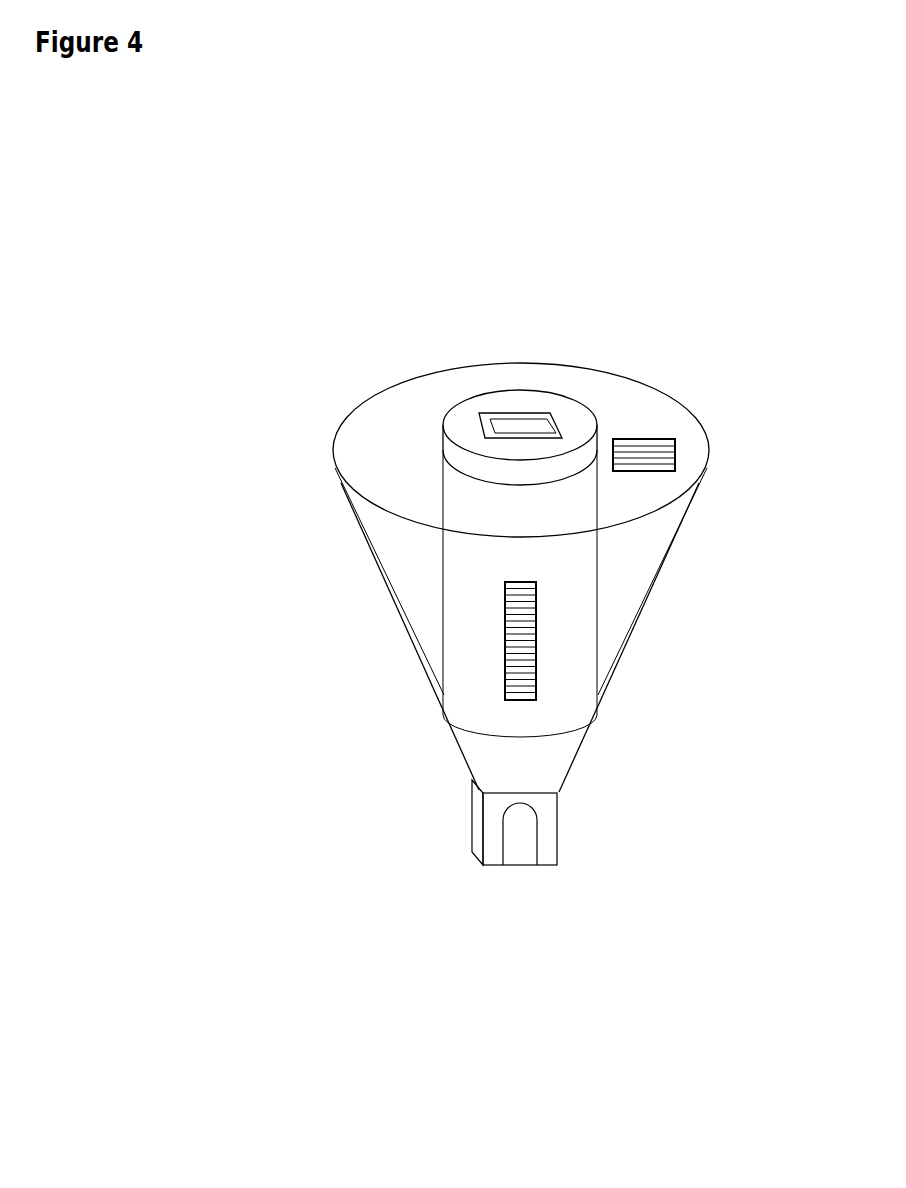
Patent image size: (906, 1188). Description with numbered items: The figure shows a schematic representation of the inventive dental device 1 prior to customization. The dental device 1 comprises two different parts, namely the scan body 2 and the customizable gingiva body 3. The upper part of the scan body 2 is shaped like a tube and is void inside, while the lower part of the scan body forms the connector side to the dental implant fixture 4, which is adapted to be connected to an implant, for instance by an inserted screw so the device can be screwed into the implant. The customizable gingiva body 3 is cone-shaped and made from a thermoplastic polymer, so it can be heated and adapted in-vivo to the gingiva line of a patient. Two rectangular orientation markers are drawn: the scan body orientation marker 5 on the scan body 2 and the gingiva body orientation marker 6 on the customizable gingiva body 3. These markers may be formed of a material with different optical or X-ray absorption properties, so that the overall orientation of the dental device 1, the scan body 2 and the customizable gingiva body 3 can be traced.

The dental device 1 is at (538, 282).
The scan body 2 is at (492, 400).
The customizable gingiva body 3 is at (613, 380).
The connector side to dental implant fixture 4 is at (573, 862).
The scan body orientation marker 5 is at (547, 675).
The gingiva body orientation marker 6 is at (678, 473).